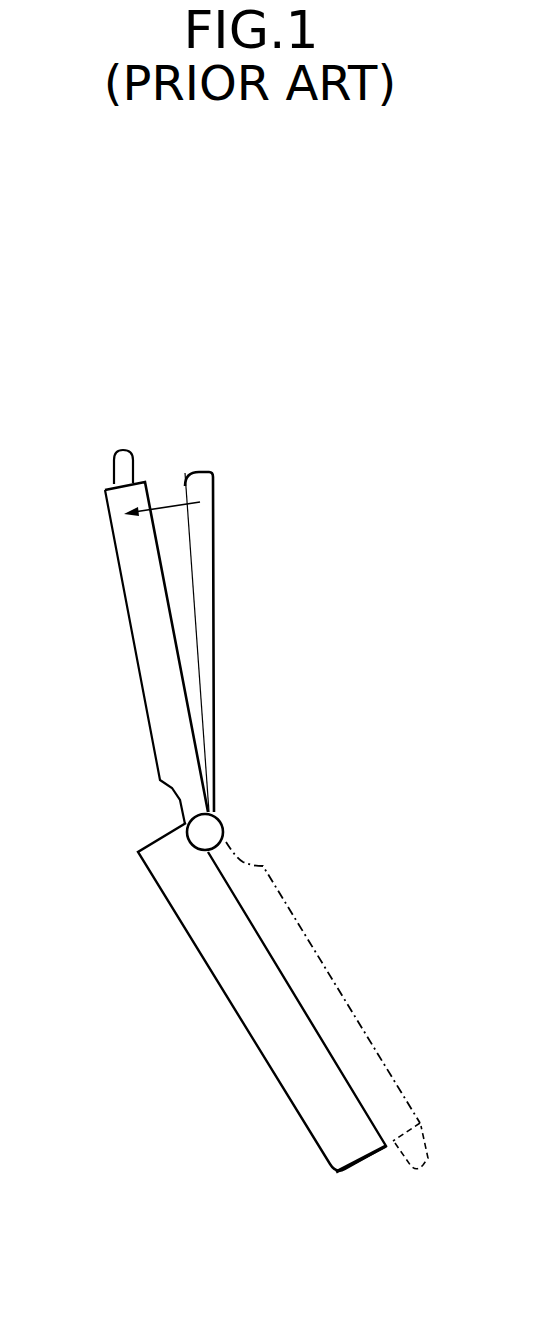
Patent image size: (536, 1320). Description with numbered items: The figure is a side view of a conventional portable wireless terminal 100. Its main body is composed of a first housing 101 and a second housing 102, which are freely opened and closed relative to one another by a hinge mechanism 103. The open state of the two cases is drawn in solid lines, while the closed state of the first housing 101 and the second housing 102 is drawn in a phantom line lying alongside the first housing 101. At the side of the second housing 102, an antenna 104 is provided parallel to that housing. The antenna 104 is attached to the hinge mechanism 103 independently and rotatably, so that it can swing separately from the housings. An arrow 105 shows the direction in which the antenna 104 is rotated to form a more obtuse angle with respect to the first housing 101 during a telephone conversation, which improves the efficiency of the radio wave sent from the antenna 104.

The portable wireless terminal 100 is at (152, 1058).
The first housing 101 is at (237, 1020).
The second housing 102 is at (217, 602).
The hinge mechanism 103 is at (218, 823).
The antenna 104 is at (135, 645).
The arrow 105 is at (163, 507).